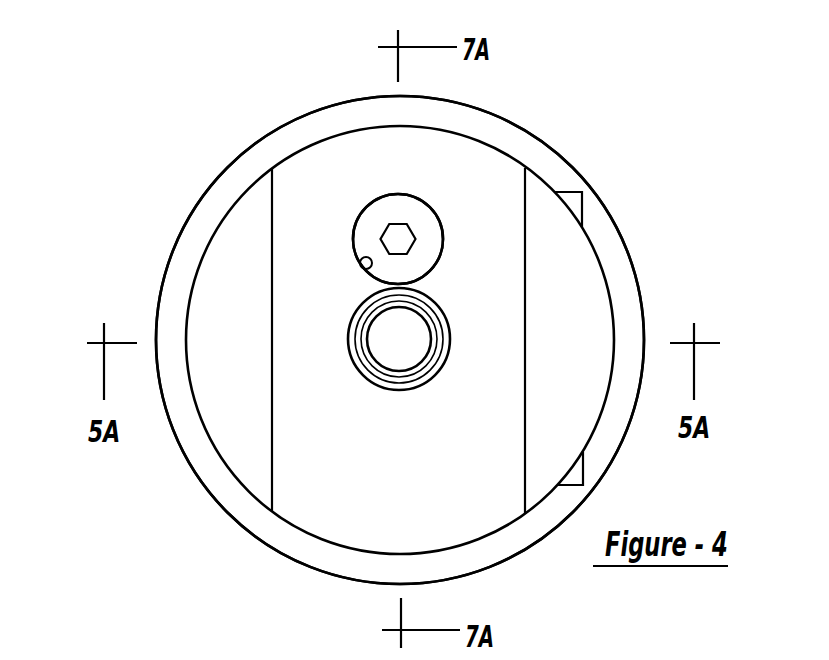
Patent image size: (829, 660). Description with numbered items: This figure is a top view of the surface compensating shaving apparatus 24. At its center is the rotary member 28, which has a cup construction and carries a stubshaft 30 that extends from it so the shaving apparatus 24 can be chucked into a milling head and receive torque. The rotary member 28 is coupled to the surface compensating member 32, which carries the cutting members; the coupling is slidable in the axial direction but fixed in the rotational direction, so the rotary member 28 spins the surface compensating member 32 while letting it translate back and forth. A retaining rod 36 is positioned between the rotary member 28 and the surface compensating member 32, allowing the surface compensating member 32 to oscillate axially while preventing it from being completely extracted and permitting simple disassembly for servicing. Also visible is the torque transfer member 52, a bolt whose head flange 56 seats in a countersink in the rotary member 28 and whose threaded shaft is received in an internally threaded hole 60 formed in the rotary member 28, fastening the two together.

The shaving apparatus 24 is at (163, 157).
The rotary member 28 is at (308, 150).
The stubshaft 30 is at (410, 388).
The surface compensating member 32 is at (641, 285).
The retaining rod 36 is at (585, 204).
The torque transfer member 52 is at (381, 194).
The head flange 56 is at (354, 228).
The internally threaded hole 60 is at (361, 265).